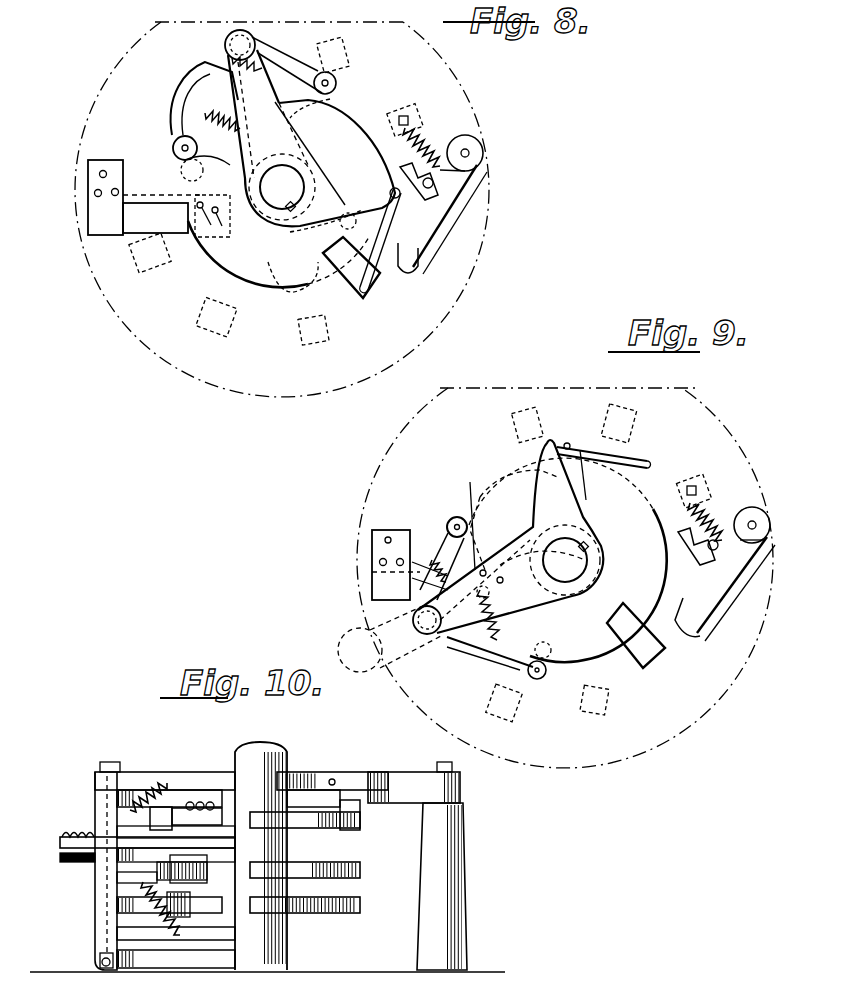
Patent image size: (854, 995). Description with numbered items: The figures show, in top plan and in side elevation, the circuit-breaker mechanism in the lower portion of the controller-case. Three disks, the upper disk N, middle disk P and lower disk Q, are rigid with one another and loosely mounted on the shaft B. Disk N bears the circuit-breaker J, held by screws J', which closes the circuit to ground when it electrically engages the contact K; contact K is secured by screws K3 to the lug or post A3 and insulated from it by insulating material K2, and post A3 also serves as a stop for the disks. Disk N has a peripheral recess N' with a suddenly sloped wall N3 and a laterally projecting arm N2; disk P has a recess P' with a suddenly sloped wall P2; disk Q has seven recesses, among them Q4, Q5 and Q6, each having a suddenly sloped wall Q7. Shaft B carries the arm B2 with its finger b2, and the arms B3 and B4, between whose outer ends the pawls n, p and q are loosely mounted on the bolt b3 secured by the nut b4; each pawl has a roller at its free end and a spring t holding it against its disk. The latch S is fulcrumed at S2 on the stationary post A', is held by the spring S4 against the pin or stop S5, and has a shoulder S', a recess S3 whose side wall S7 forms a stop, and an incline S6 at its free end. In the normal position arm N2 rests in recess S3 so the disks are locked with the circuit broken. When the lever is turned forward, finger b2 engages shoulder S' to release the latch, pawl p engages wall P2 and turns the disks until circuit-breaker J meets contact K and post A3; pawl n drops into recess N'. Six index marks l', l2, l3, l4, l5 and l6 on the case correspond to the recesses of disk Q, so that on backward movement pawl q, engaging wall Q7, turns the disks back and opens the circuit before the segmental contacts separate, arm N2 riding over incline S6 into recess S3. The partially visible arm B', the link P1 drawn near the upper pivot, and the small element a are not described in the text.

In FIG. 8, the shaft B is at (282, 187).
In FIG. 9, the shaft B is at (461, 598).
In FIG. 10, the shaft B is at (270, 854).
In FIG. 8, the arm B' is at (202, 15).
In FIG. 8, the laterally-extending arm B2 is at (311, 140).
In FIG. 9, the laterally-extending arm B2 is at (510, 536).
In FIG. 10, the laterally-extending arm B2 is at (312, 772).
In FIG. 8, the laterally-extending arm B3 is at (285, 114).
In FIG. 9, the laterally-extending arm B3 is at (512, 580).
In FIG. 10, the laterally-extending arm B3 is at (160, 773).
In FIG. 10, the laterally-extending arm B4 is at (180, 950).
In FIG. 8, the laterally-projecting finger b2 is at (382, 241).
In FIG. 9, the laterally-projecting finger b2 is at (617, 465).
In FIG. 10, the laterally-projecting finger b2 is at (358, 772).
In FIG. 8, the bolt b3 is at (255, 36).
In FIG. 9, the bolt b3 is at (425, 636).
In FIG. 10, the bolt b3 is at (106, 762).
In FIG. 10, the nut b4 is at (98, 960).
In FIG. 8, the circuit-breaker J is at (161, 214).
In FIG. 9, the circuit-breaker J is at (438, 566).
In FIG. 10, the circuit-breaker J is at (72, 874).
In FIG. 8, the screws J' is at (212, 223).
In FIG. 9, the screws J' is at (501, 571).
In FIG. 10, the screws J' is at (169, 783).
In FIG. 8, the contact K is at (88, 197).
In FIG. 9, the contact K is at (372, 548).
In FIG. 10, the contact K is at (62, 841).
In FIG. 10, the insulating substance K2 is at (63, 863).
In FIG. 8, the screws K3 is at (88, 176).
In FIG. 9, the screws K3 is at (388, 538).
In FIG. 10, the screws K3 is at (77, 820).
In FIG. 8, the upper disk N is at (278, 254).
In FIG. 9, the upper disk N is at (568, 560).
In FIG. 10, the upper disk N is at (305, 832).
In FIG. 8, the peripheral recess N' is at (199, 164).
In FIG. 8, the laterally-projecting arm N2 is at (363, 275).
In FIG. 9, the laterally-projecting arm N2 is at (652, 662).
In FIG. 10, the laterally-projecting arm N2 is at (360, 810).
In FIG. 8, the side wall N3 is at (183, 184).
In FIG. 9, the side wall N3 is at (472, 514).
In FIG. 8, the middle disk P is at (181, 152).
In FIG. 9, the middle disk P is at (515, 534).
In FIG. 10, the middle disk P is at (251, 869).
In FIG. 8, the peripheral recess P' is at (300, 153).
In FIG. 9, the peripheral recess P' is at (588, 480).
In FIG. 9, the rod P1 is at (592, 446).
In FIG. 8, the side wall P2 is at (336, 92).
In FIG. 10, the lower disk Q is at (360, 905).
In FIG. 8, the peripheral recess Q4 is at (344, 226).
In FIG. 9, the peripheral recess Q4 is at (548, 638).
In FIG. 10, the peripheral recess Q4 is at (322, 912).
In FIG. 8, the peripheral recess Q5 is at (308, 260).
In FIG. 10, the peripheral recess Q5 is at (290, 912).
In FIG. 8, the peripheral recess Q6 is at (272, 280).
In FIG. 9, the peripheral recess Q6 is at (612, 664).
In FIG. 8, the side wall Q7 is at (288, 305).
In FIG. 9, the side wall Q7 is at (640, 602).
In FIG. 8, the latch S is at (445, 216).
In FIG. 9, the latch S is at (732, 585).
In FIG. 10, the latch S is at (414, 773).
In FIG. 8, the shoulder S' is at (414, 188).
In FIG. 9, the shoulder S' is at (691, 543).
In FIG. 8, the fulcrum S2 is at (469, 153).
In FIG. 9, the fulcrum S2 is at (754, 522).
In FIG. 10, the fulcrum S2 is at (454, 767).
In FIG. 8, the recess S3 is at (436, 240).
In FIG. 9, the recess S3 is at (722, 611).
In FIG. 8, the spring S4 is at (426, 141).
In FIG. 9, the spring S4 is at (715, 513).
In FIG. 8, the stationary pin or stop S5 is at (434, 183).
In FIG. 9, the stationary pin or stop S5 is at (719, 546).
In FIG. 8, the incline S6 is at (425, 262).
In FIG. 9, the incline S6 is at (692, 637).
In FIG. 8, the side wall S7 is at (415, 214).
In FIG. 9, the side wall S7 is at (694, 585).
In FIG. 8, the lug or index-mark l' is at (303, 43).
In FIG. 9, the lug or index-mark l' is at (536, 419).
In FIG. 8, the lug or index-mark l2 is at (346, 61).
In FIG. 9, the lug or index-mark l2 is at (634, 428).
In FIG. 8, the lug or index-mark l3 is at (405, 111).
In FIG. 9, the lug or index-mark l3 is at (700, 480).
In FIG. 8, the lug or index-mark l4 is at (328, 330).
In FIG. 9, the lug or index-mark l4 is at (600, 712).
In FIG. 8, the lug or index-mark l5 is at (226, 322).
In FIG. 9, the lug or index-mark l5 is at (504, 703).
In FIG. 8, the lug or index-mark l6 is at (162, 262).
In FIG. 9, the lug or index-mark l6 is at (432, 638).
In FIG. 8, the pawl n is at (178, 104).
In FIG. 9, the pawl n is at (490, 660).
In FIG. 10, the pawl n is at (148, 820).
In FIG. 8, the pawl p is at (340, 33).
In FIG. 9, the pawl p is at (447, 524).
In FIG. 8, the spring t is at (214, 114).
In FIG. 9, the spring t is at (497, 644).
In FIG. 10, the spring t is at (147, 800).
In FIG. 9, the pawl q is at (537, 682).
In FIG. 10, the pawl q is at (125, 910).
In FIG. 10, the stop block a is at (444, 767).
In FIG. 10, the stationary post or lug A' is at (460, 886).
In FIG. 10, the lug or post A3 is at (68, 905).